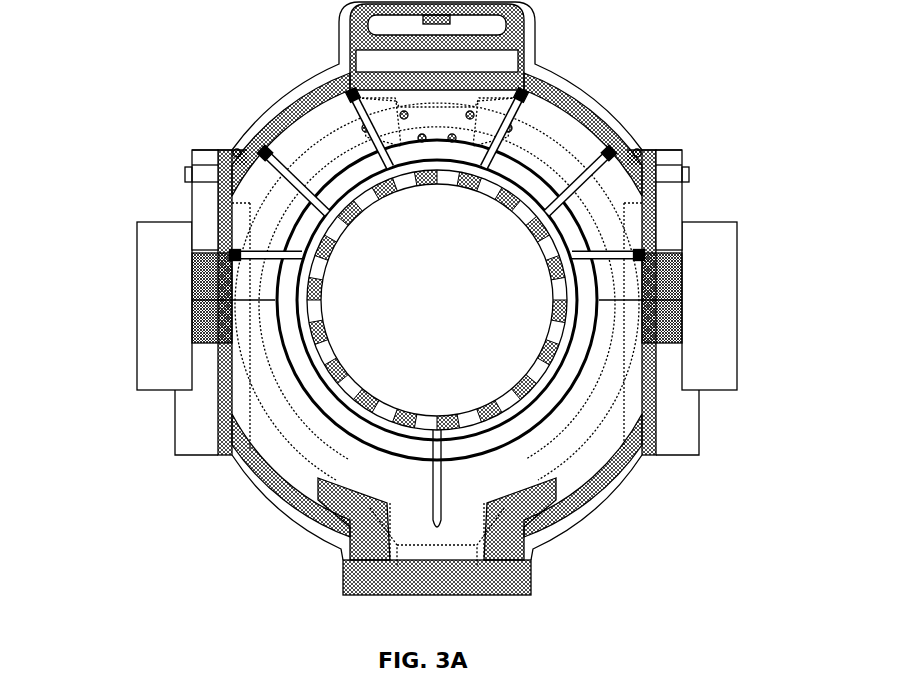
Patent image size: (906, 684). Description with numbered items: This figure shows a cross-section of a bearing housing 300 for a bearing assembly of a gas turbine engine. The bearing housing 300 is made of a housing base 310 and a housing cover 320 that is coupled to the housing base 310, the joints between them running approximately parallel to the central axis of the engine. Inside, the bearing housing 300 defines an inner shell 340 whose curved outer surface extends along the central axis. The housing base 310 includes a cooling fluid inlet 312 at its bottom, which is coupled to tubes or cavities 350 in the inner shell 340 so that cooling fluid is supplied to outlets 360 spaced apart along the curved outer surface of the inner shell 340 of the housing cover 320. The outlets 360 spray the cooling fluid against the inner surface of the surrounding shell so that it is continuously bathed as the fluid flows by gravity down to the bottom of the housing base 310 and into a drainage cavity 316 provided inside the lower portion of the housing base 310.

The bearing housing 300 is at (117, 44).
The housing base 310 is at (607, 527).
The cooling fluid inlet 312 is at (437, 533).
The drainage cavity 316 is at (422, 558).
The housing cover 320 is at (618, 95).
The inner shell 340 is at (317, 110).
The tubes or cavities 350 is at (292, 167).
The outlets 360 is at (350, 90).